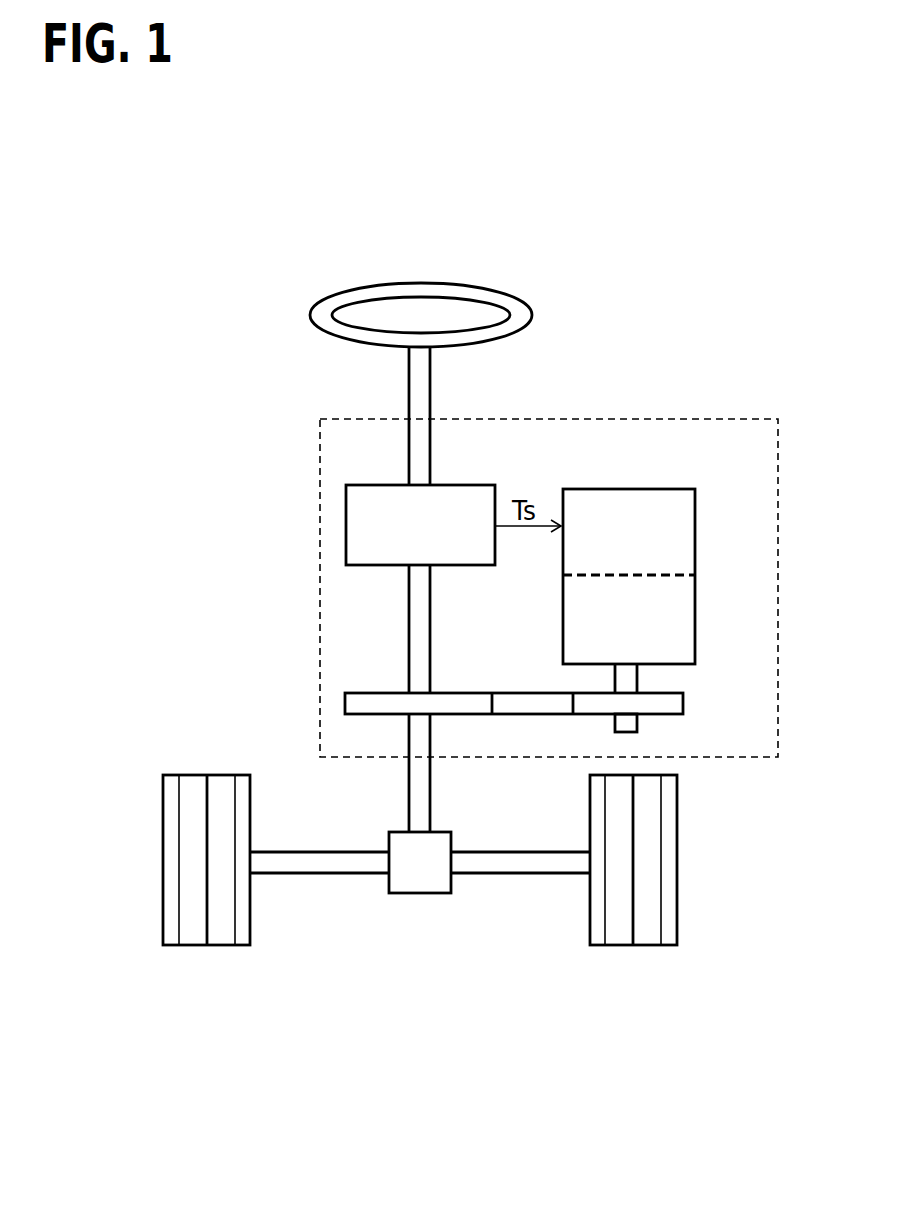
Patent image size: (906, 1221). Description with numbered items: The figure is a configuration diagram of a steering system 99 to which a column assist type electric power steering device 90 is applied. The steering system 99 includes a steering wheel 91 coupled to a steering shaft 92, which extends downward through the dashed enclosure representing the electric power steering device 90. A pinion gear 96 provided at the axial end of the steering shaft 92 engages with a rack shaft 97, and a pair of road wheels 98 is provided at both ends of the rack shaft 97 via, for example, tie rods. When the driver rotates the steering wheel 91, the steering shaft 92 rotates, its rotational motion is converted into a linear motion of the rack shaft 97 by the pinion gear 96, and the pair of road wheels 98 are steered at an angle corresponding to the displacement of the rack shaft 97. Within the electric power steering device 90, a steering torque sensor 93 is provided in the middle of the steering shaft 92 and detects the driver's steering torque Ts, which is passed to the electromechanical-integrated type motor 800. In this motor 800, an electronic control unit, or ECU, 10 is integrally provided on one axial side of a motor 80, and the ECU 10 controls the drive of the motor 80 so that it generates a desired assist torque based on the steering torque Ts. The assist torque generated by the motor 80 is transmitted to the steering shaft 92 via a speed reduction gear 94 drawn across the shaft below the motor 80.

The electric power steering device 90 is at (690, 419).
The steering wheel 91 is at (310, 317).
The steering shaft 92 is at (425, 394).
The steering torque sensor 93 is at (463, 485).
The electromechanical-integrated type motor 800 is at (628, 489).
The electronic control unit (ECU) 10 is at (695, 537).
The motor 80 is at (695, 617).
The speed reduction gear 94 is at (683, 706).
The pinion gear 96 is at (410, 893).
The rack shaft 97 is at (312, 873).
The pair of road wheels 98 is at (222, 945).
The steering system 99 is at (367, 995).